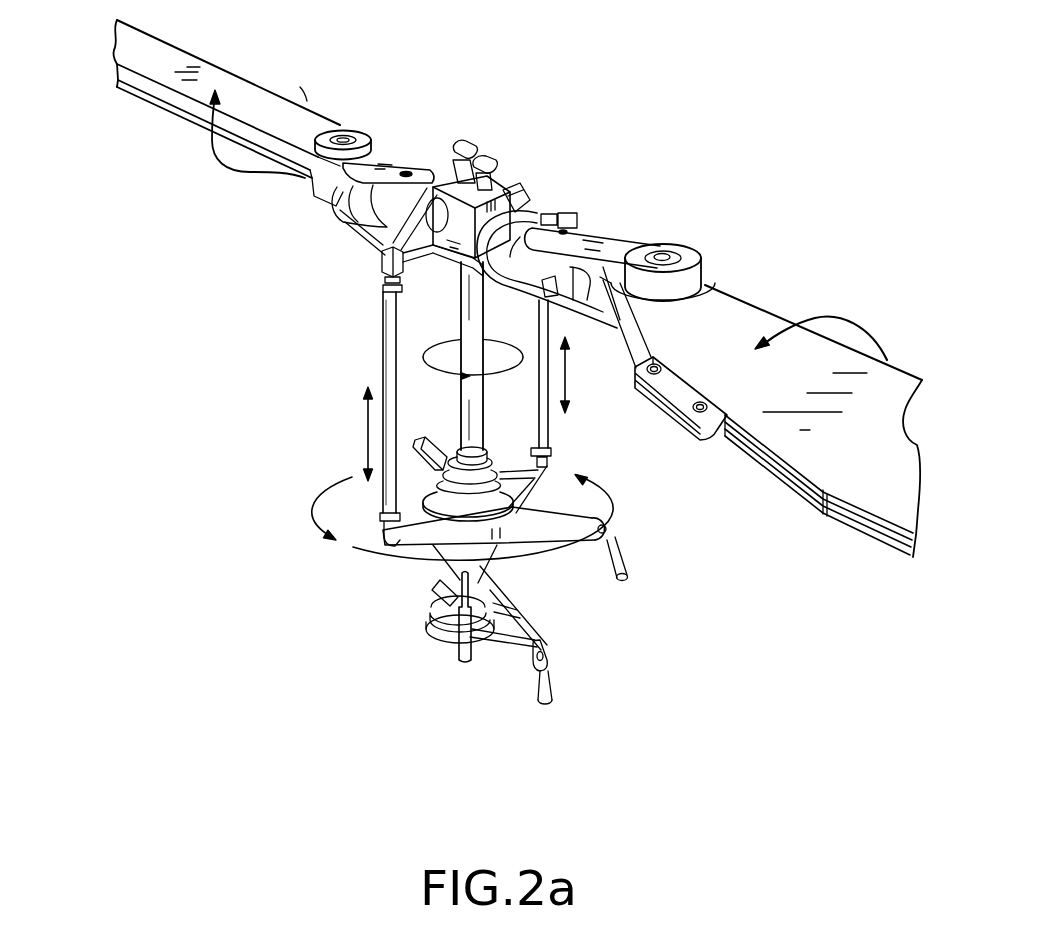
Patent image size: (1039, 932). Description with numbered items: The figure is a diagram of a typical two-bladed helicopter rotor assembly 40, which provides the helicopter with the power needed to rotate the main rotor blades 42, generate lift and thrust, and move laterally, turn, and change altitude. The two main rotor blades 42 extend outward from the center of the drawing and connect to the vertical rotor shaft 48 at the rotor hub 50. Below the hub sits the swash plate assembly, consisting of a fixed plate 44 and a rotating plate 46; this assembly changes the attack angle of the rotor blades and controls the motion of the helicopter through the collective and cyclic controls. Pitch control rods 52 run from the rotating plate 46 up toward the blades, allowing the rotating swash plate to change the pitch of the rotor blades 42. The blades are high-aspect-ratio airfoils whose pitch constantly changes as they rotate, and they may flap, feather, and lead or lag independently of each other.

The helicopter rotor assembly 40 is at (155, 208).
The main rotor blades 42 is at (260, 98).
The fixed plate 44 is at (518, 638).
The rotating plate 46 is at (423, 540).
The rotor shaft 48 is at (458, 395).
The rotor hub 50 is at (531, 161).
The pitch control rods 52 is at (382, 342).